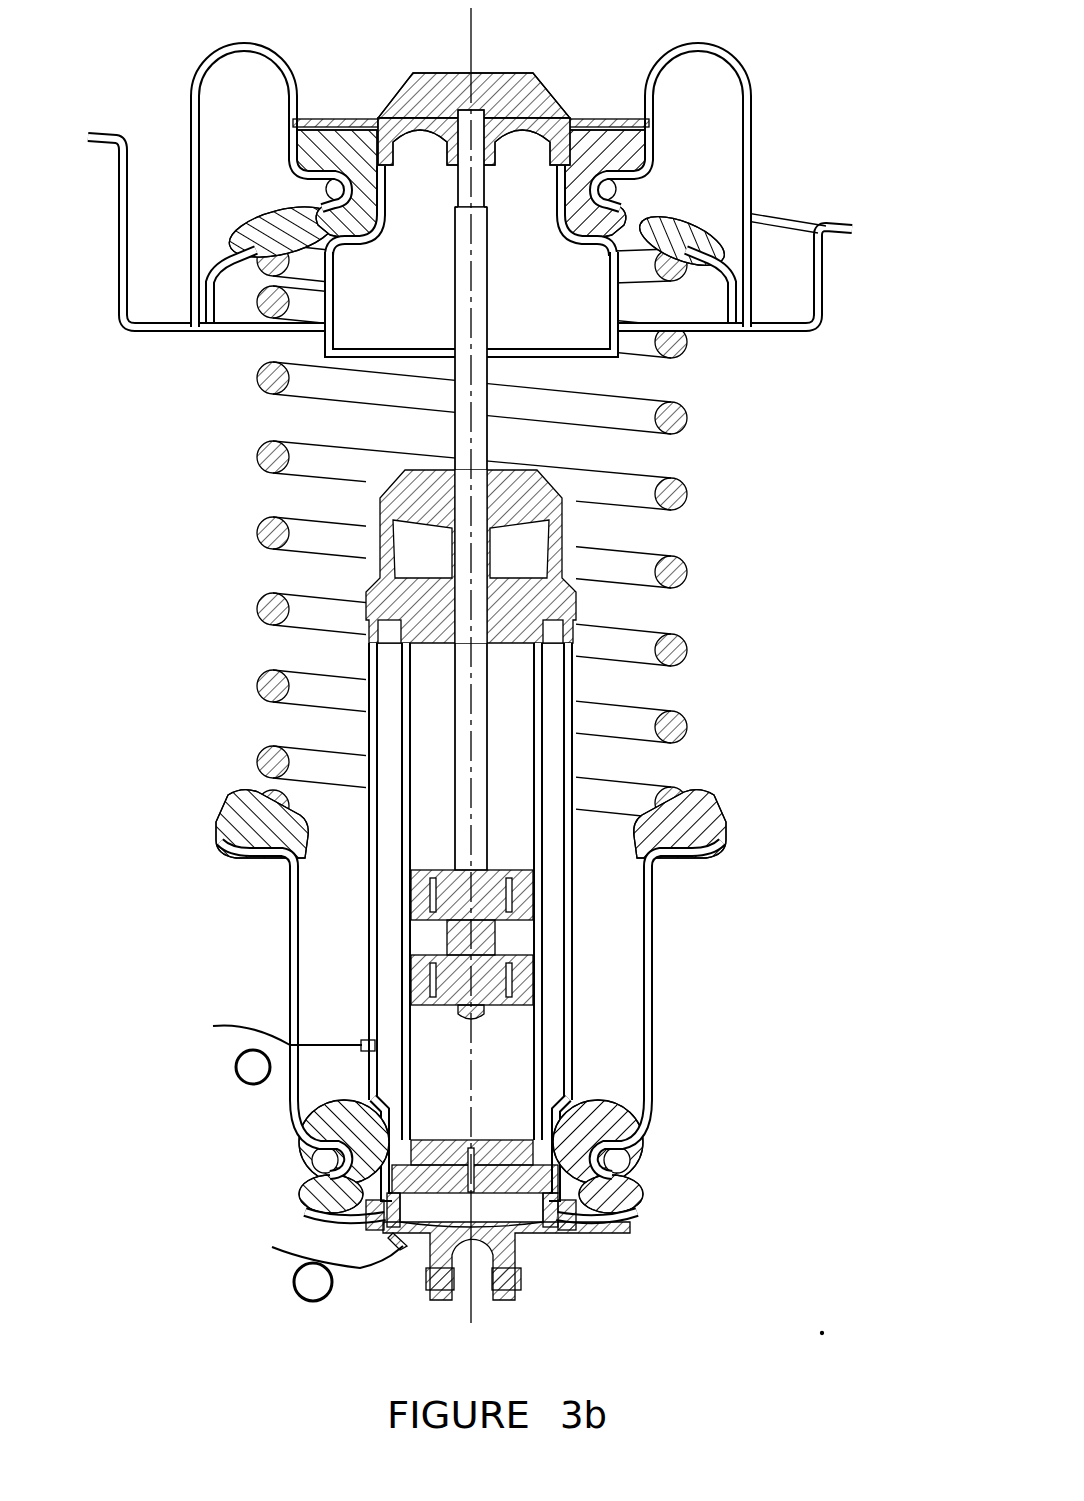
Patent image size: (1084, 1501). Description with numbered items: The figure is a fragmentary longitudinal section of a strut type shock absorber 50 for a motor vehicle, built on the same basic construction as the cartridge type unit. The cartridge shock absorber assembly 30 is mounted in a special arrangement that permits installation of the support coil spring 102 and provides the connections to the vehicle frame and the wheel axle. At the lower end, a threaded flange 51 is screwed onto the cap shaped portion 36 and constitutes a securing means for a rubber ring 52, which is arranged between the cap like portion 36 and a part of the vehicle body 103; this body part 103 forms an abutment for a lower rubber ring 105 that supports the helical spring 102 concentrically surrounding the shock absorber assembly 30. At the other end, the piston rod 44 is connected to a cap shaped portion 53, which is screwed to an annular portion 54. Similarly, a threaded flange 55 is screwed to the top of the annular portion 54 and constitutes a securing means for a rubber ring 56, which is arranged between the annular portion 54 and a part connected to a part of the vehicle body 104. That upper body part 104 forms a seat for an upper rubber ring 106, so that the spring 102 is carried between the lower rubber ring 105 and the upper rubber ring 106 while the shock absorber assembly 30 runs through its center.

The cartridge shock absorber assembly 30 is at (372, 912).
The cap shaped portion 36 is at (520, 1237).
The piston rod 44 is at (480, 362).
The strut type shock absorber 50 is at (213, 1327).
The threaded flange 51 is at (600, 1227).
The rubber ring 52 is at (640, 1182).
The cap shaped portion 53 is at (420, 74).
The annular portion 54 is at (562, 225).
The threaded flange 55 is at (563, 117).
The rubber ring 56 is at (620, 148).
The support coil spring 102 is at (688, 716).
The vehicle body part 103 is at (657, 1000).
The vehicle body part 104 is at (753, 163).
The lower rubber ring 105 is at (728, 797).
The upper rubber ring 106 is at (690, 240).